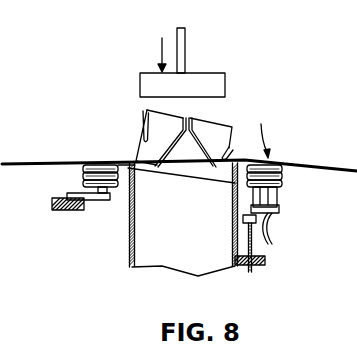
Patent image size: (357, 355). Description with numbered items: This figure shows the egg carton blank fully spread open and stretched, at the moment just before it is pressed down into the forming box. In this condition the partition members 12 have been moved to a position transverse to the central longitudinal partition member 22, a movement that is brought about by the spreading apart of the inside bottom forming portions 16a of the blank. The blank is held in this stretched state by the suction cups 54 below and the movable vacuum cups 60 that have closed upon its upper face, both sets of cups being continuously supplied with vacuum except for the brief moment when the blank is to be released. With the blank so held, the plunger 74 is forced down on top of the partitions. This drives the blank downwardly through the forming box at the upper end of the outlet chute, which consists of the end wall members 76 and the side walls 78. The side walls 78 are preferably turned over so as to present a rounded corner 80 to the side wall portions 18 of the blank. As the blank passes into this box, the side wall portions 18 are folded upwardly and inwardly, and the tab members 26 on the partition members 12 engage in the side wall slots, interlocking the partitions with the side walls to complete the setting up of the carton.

The plunger 74 is at (207, 80).
The central longitudinal partition member 22 is at (147, 113).
The partition members 12 is at (226, 123).
The tab members 26 is at (141, 130).
The inside bottom forming portions 16a is at (178, 160).
The side wall portions 18 is at (158, 166).
The side walls 78 is at (129, 246).
The end wall members 76 is at (162, 258).
The rounded corner 80 is at (129, 173).
The suction cups 54 is at (80, 176).
The movable vacuum cups 60 is at (283, 178).